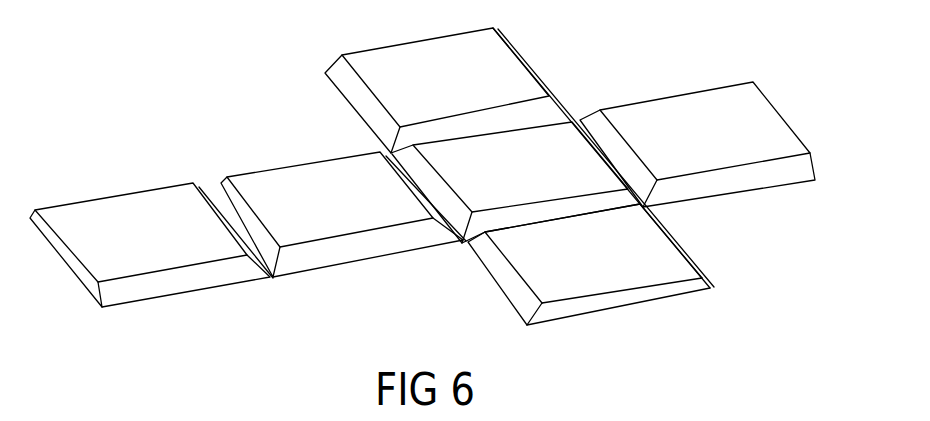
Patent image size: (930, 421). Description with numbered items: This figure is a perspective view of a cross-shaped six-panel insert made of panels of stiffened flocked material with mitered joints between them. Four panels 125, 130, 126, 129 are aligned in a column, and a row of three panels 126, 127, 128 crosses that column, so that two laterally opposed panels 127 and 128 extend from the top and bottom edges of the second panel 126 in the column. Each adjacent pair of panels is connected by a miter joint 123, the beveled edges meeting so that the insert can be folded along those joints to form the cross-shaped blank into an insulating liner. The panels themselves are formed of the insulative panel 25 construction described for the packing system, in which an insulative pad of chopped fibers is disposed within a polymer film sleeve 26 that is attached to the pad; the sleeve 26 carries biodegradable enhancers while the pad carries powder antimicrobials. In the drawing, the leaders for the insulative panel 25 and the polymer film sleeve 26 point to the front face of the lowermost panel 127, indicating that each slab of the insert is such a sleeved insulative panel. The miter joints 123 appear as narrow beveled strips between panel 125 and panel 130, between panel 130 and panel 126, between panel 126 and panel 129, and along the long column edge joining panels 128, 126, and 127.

The miter joints 123 is at (227, 200).
The panel 125 is at (126, 244).
The second panel 126 is at (500, 176).
The panel 127 is at (574, 263).
The panel 128 is at (429, 88).
The panel 129 is at (688, 141).
The panel 130 is at (313, 208).
The insulative panel 25 is at (648, 295).
The polymer film sleeve 26 is at (597, 300).